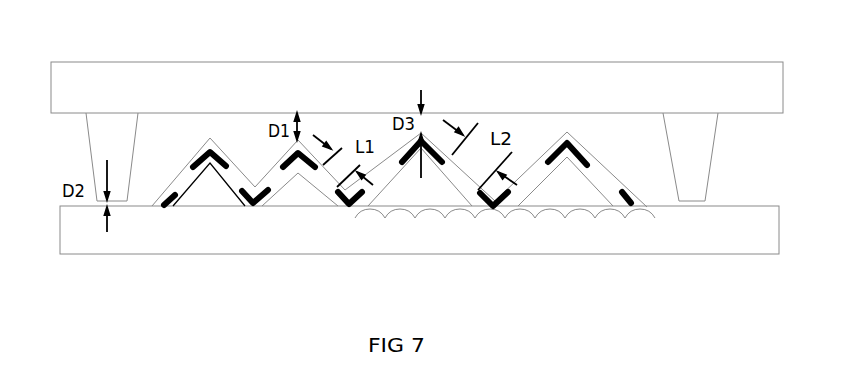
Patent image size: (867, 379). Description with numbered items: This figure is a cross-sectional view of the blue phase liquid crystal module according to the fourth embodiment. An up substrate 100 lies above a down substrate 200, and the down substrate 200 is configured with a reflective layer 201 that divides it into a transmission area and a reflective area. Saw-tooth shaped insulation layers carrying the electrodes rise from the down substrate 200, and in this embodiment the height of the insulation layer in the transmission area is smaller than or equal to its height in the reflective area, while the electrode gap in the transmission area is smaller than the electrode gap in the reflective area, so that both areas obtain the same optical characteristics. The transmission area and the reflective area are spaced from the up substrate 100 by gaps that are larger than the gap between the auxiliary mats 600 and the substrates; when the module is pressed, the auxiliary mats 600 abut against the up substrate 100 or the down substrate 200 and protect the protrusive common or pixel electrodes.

The up substrate 100 is at (308, 73).
The auxiliary mats 600 is at (100, 147).
The down substrate 200 is at (637, 255).
The reflective layer 201 is at (335, 218).